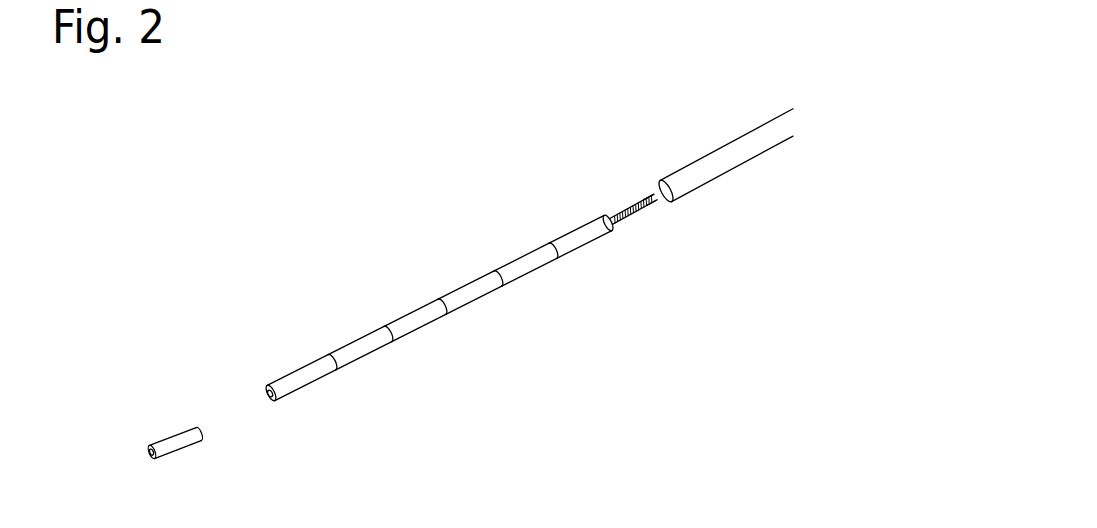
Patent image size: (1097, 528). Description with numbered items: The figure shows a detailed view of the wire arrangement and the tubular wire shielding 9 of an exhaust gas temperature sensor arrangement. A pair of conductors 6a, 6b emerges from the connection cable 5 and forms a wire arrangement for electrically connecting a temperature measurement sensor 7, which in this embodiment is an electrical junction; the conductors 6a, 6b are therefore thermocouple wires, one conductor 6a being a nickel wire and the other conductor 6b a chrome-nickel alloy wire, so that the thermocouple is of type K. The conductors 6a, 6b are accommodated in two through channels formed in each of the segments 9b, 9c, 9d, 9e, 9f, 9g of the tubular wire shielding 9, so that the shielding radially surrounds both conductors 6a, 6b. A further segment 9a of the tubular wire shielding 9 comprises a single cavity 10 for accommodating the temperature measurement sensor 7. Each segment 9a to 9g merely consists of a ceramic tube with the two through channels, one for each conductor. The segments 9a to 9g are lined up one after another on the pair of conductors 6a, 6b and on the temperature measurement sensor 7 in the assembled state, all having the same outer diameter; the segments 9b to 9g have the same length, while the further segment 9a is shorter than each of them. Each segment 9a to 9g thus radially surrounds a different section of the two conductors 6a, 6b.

The connection cable 5 is at (725, 165).
The conductor 6a is at (633, 200).
The conductor 6b is at (650, 202).
The temperature measurement sensor 7 is at (262, 400).
The tubular wire shielding 9 is at (481, 290).
The further segment 9a is at (183, 443).
The segment 9b is at (310, 377).
The segment 9c is at (362, 352).
The segment 9d is at (417, 322).
The segment 9e is at (472, 292).
The segment 9f is at (525, 258).
The segment 9g is at (583, 235).
The cavity 10 is at (163, 462).